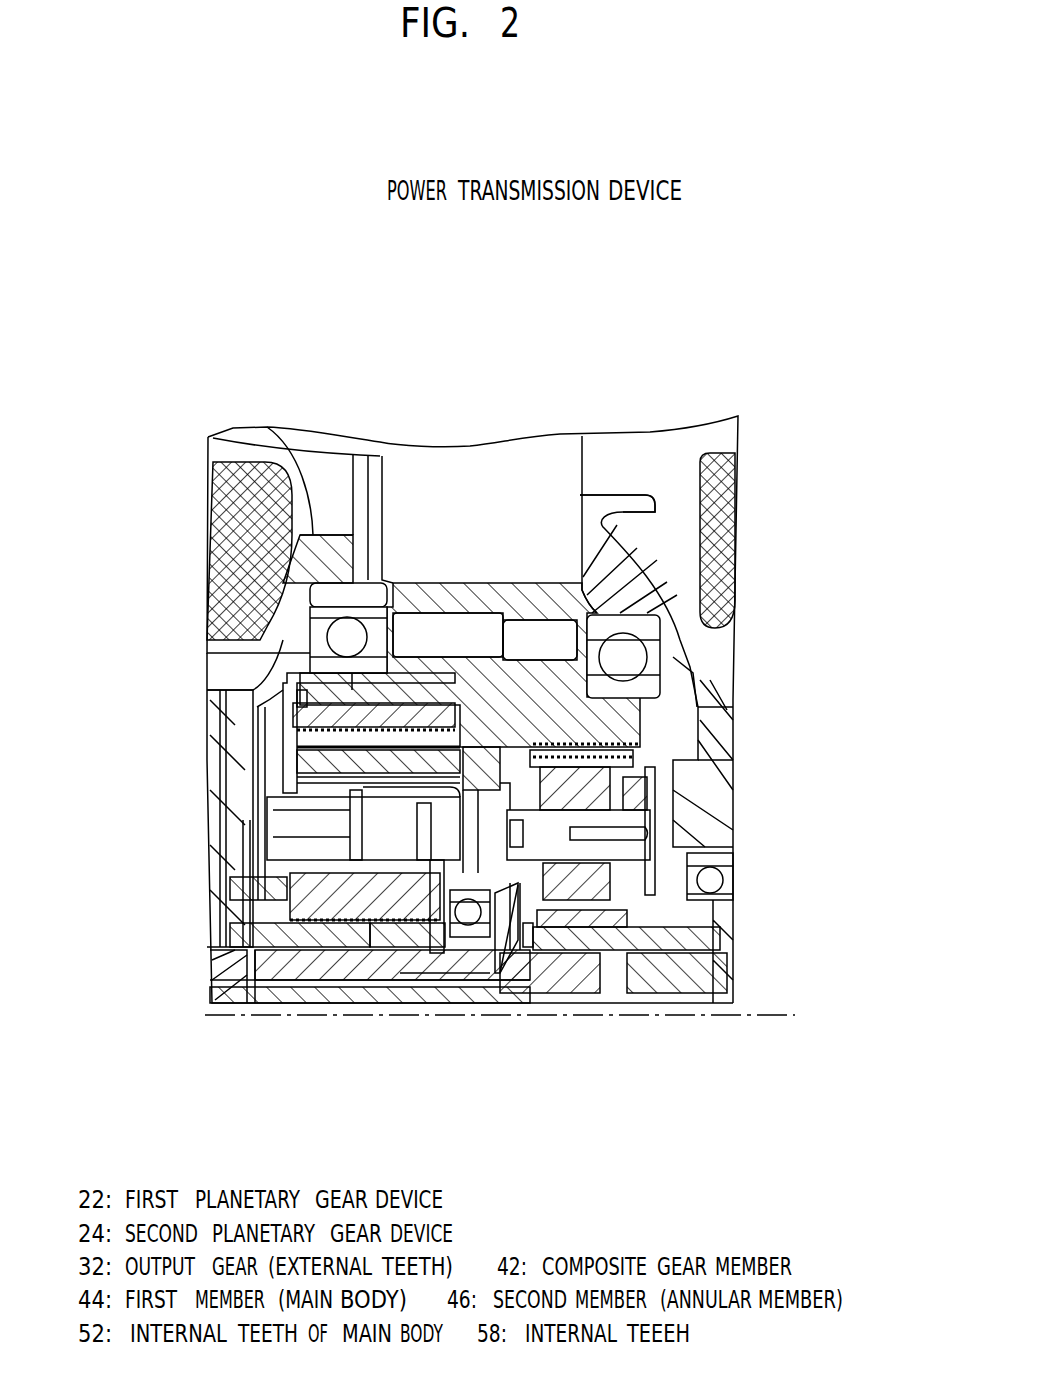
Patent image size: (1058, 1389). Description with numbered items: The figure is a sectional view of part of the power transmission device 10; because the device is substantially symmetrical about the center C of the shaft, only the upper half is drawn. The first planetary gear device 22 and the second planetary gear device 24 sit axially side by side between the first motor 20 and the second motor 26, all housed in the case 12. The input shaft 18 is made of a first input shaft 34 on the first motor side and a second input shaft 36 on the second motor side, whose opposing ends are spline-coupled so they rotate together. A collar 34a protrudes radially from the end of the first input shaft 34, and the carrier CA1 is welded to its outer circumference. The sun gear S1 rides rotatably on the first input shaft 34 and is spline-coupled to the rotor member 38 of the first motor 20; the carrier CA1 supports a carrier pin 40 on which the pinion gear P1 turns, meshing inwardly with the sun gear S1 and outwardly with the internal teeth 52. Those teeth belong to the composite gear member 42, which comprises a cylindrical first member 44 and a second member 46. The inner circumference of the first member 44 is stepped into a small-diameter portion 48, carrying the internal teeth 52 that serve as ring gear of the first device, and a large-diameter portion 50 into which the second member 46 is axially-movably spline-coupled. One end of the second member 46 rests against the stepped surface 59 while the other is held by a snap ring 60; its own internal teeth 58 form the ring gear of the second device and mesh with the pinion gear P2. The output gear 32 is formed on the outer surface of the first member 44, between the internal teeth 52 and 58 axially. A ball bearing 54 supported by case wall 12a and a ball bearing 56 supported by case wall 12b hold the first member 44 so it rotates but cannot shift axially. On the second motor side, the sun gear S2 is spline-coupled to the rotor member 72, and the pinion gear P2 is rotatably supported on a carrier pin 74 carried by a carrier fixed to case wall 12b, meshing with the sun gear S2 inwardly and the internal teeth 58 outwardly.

The power transmission device 10 is at (498, 282).
The case 12 is at (403, 572).
The case wall 12a is at (710, 707).
The case wall 12b is at (215, 750).
The input shaft 18 is at (447, 1020).
The first motor 20 is at (745, 562).
The first planetary gear device 22 is at (658, 907).
The second planetary gear device 24 is at (309, 896).
The second motor 26 is at (205, 567).
The output gear 32 is at (447, 628).
The first input shaft 34 is at (673, 993).
The collar 34a is at (490, 1003).
The second input shaft 36 is at (287, 993).
The rotor member 38 is at (700, 918).
The carrier pin 40 is at (613, 817).
The composite gear member 42 is at (546, 594).
The first member 44 is at (527, 637).
The second member 46 is at (314, 569).
The small-diameter portion 48 is at (547, 697).
The large-diameter portion 50 is at (352, 680).
The internal teeth 52 is at (645, 783).
The ball bearing 54 is at (633, 657).
The ball bearing 56 is at (305, 653).
The internal teeth 58 is at (463, 740).
The stepped surface 59 is at (627, 757).
The snap ring 60 is at (257, 703).
The rotor member 72 is at (225, 963).
The carrier pin 74 is at (297, 850).
The carrier CA1 is at (245, 790).
The pinion gear P1 is at (603, 890).
The pinion gear P2 is at (280, 890).
The sun gear S1 is at (600, 993).
The sun gear S2 is at (375, 990).
The center C is at (787, 1015).